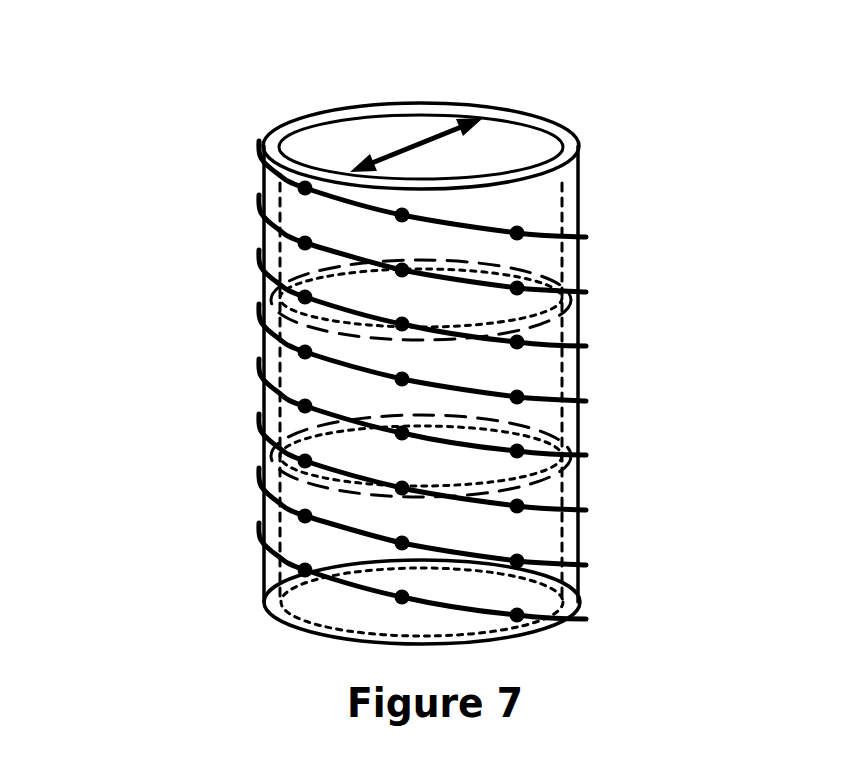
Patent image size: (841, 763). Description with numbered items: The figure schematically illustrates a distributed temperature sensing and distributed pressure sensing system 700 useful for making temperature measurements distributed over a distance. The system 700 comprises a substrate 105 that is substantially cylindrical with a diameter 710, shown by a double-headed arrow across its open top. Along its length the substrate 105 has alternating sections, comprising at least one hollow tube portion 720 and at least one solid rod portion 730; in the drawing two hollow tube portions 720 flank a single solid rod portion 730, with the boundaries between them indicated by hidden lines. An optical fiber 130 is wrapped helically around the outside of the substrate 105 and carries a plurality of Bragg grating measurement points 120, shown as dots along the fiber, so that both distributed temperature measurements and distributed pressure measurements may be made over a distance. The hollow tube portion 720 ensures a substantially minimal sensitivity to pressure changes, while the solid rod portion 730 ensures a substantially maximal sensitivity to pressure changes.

The distributed temperature sensing and distributed pressure sensing system 700 is at (207, 180).
The substrate 105 is at (298, 105).
The diameter 710 is at (418, 135).
The hollow tube portion 720 is at (592, 214).
The solid rod portion 730 is at (592, 384).
The Bragg grating measurement points 120 is at (298, 395).
The optical fiber 130 is at (258, 468).